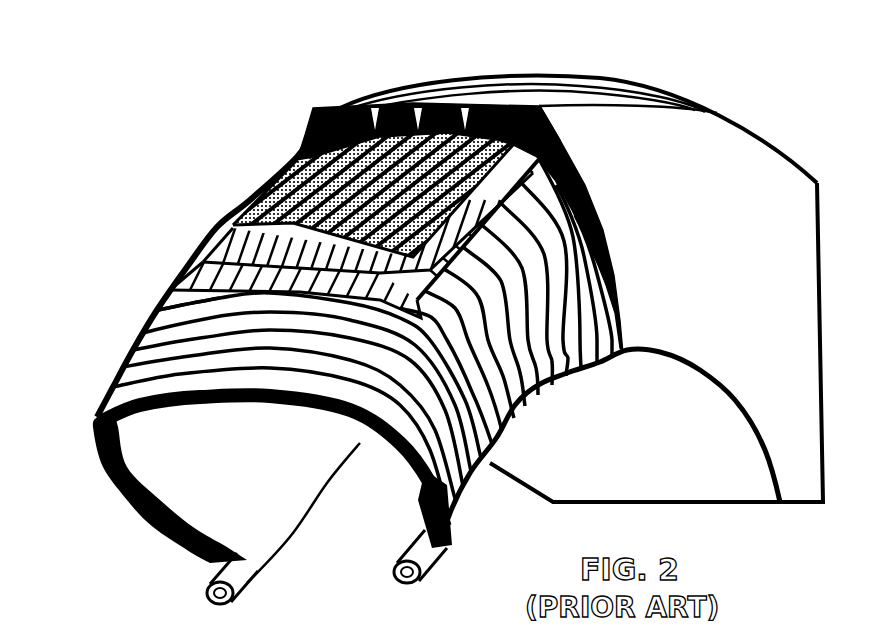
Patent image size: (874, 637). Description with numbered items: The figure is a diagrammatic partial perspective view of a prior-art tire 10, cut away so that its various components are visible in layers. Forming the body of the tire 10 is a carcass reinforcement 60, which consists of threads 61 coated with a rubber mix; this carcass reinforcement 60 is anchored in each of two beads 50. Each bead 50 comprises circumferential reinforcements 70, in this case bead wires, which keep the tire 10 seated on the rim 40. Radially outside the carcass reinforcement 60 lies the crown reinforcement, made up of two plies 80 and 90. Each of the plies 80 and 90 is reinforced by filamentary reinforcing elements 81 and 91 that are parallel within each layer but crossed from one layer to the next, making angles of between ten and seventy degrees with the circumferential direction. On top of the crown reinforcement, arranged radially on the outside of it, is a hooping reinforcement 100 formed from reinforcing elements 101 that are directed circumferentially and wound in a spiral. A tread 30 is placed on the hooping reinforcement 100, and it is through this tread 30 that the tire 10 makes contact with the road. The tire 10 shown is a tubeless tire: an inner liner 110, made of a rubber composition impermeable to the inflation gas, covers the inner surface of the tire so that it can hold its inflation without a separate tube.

The tire 10 is at (724, 58).
The tread 30 is at (362, 106).
The rim 40 is at (652, 253).
The beads 50 is at (370, 539).
The carcass reinforcement 60 is at (72, 287).
The threads 61 is at (185, 345).
The circumferential reinforcements 70 is at (403, 572).
The ply 80 is at (110, 203).
The filamentary reinforcing elements 81 is at (217, 253).
The ply 90 is at (118, 120).
The filamentary reinforcing elements 91 is at (250, 198).
The hooping reinforcement 100 is at (172, 35).
The reinforcing elements 101 is at (293, 160).
The inner liner 110 is at (240, 467).